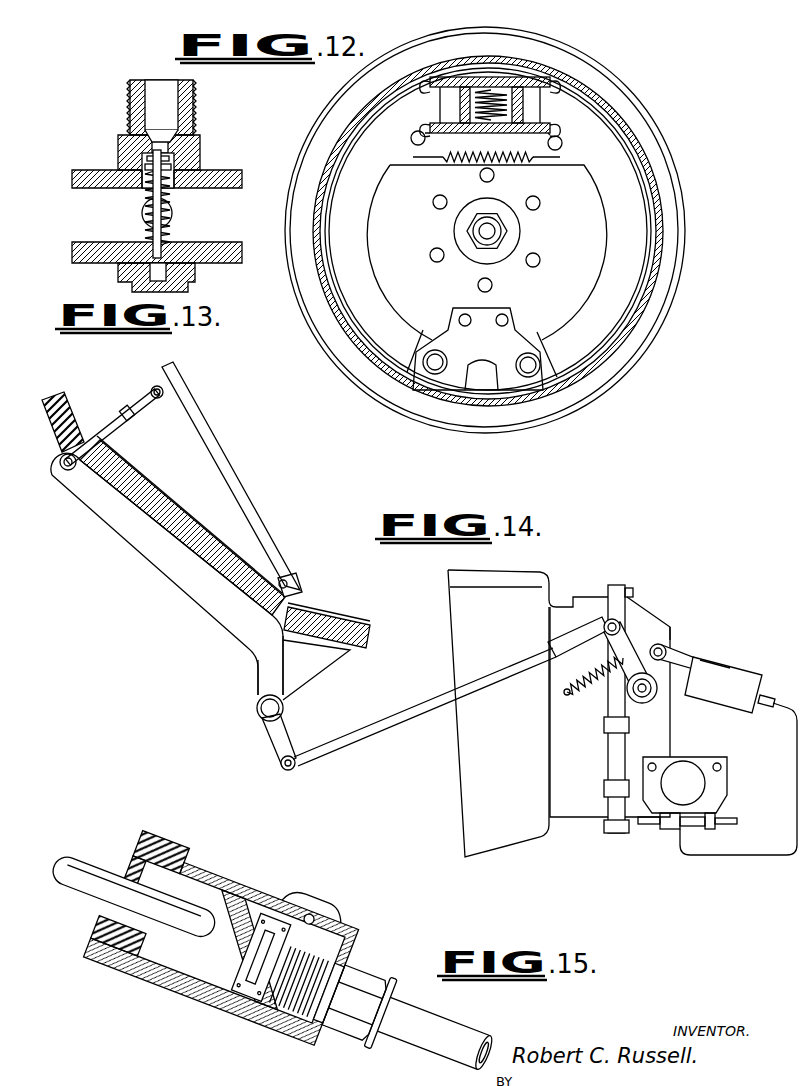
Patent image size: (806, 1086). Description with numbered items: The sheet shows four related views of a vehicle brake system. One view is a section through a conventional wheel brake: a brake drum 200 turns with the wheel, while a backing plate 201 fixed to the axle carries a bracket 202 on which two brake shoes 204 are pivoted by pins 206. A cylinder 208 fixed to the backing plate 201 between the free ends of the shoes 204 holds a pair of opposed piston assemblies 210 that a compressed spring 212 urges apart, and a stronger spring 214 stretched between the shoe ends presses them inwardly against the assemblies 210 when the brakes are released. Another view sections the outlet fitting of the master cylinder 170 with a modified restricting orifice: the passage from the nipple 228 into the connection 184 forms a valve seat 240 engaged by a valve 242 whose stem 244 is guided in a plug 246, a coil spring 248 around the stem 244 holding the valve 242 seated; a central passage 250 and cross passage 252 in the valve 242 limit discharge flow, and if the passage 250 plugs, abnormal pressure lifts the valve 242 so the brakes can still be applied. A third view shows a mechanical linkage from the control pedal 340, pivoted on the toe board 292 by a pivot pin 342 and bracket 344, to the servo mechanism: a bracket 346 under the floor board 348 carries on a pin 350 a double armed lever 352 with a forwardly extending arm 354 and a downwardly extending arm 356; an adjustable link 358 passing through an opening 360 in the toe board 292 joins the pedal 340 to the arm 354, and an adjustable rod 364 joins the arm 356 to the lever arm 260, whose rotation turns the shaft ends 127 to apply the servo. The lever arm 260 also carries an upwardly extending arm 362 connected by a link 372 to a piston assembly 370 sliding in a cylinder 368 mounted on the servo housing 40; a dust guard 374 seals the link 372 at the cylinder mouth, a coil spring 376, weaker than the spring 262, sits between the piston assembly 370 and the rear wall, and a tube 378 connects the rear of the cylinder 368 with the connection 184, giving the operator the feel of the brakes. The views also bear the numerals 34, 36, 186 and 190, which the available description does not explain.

In FIG. 14, the body / dash structure 34 is at (529, 713).
In FIG. 14, the bracket 36 is at (656, 610).
In FIG. 14, the housing 40 is at (610, 712).
In FIG. 14, the shaft ends 127 is at (668, 705).
In FIG. 14, the master cylinder 170 is at (698, 794).
In FIG. 13, the connection 184 is at (232, 170).
In FIG. 14, the connection 184 is at (677, 835).
In FIG. 14, the fitting 186 is at (648, 826).
In FIG. 14, the fitting 190 is at (723, 827).
In FIG. 12, the brake drum 200 is at (655, 176).
In FIG. 12, the backing plate 201 is at (487, 271).
In FIG. 12, the bracket 202 is at (478, 349).
In FIG. 12, the brake shoes 204 is at (385, 286).
In FIG. 12, the pins 206 is at (522, 360).
In FIG. 12, the cylinder 208 is at (527, 72).
In FIG. 12, the piston assemblies 210 is at (508, 80).
In FIG. 12, the spring 212 is at (476, 134).
In FIG. 12, the spring 214 is at (462, 162).
In FIG. 13, the nipple 228 is at (195, 102).
In FIG. 13, the valve seat 240 is at (197, 158).
In FIG. 13, the valve 242 is at (150, 158).
In FIG. 13, the stem 244 is at (140, 208).
In FIG. 13, the plug 246 is at (171, 235).
In FIG. 13, the coil spring 248 is at (173, 213).
In FIG. 13, the central passage 250 is at (185, 133).
In FIG. 13, the cross passage 252 is at (148, 166).
In FIG. 14, the lever arm 260 is at (650, 633).
In FIG. 14, the spring 262 is at (572, 699).
In FIG. 14, the toe board 292 is at (137, 471).
In FIG. 14, the control pedal 340 is at (223, 459).
In FIG. 14, the pivot pin 342 is at (293, 581).
In FIG. 14, the bracket 344 is at (280, 575).
In FIG. 14, the bracket 346 is at (313, 676).
In FIG. 14, the floor board 348 is at (337, 612).
In FIG. 14, the pin 350 is at (262, 707).
In FIG. 14, the double armed lever 352 is at (247, 683).
In FIG. 14, the forwardly extending arm 354 is at (213, 608).
In FIG. 14, the downwardly extending arm 356 is at (280, 744).
In FIG. 14, the longitudinally adjustable link 358 is at (118, 420).
In FIG. 14, the opening 360 is at (92, 457).
In FIG. 14, the upwardly extending arm 362 is at (680, 647).
In FIG. 14, the rod 364 is at (395, 726).
In FIG. 14, the cylinder 368 is at (730, 685).
In FIG. 15, the cylinder 368 is at (233, 1022).
In FIG. 15, the piston assembly 370 is at (197, 999).
In FIG. 14, the link 372 is at (718, 656).
In FIG. 15, the link 372 is at (87, 905).
In FIG. 15, the dust guard 374 is at (132, 826).
In FIG. 15, the coil spring 376 is at (253, 1028).
In FIG. 14, the tube 378 is at (737, 858).
In FIG. 15, the tube 378 is at (418, 1016).